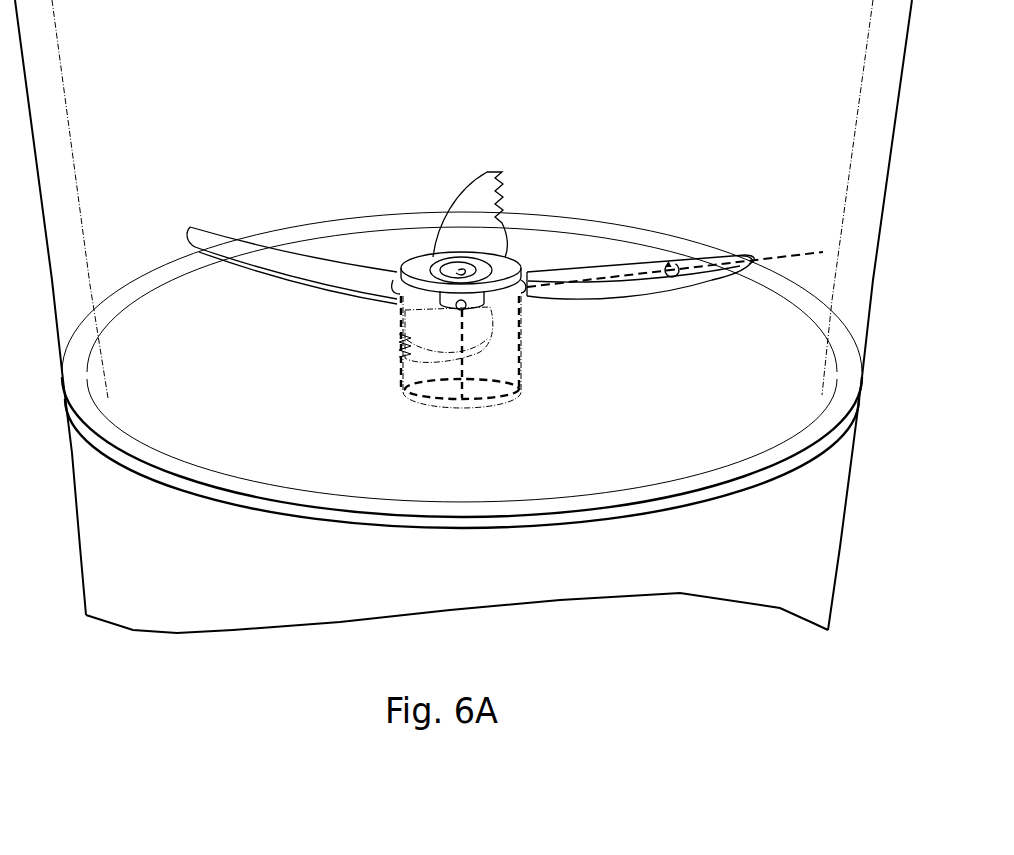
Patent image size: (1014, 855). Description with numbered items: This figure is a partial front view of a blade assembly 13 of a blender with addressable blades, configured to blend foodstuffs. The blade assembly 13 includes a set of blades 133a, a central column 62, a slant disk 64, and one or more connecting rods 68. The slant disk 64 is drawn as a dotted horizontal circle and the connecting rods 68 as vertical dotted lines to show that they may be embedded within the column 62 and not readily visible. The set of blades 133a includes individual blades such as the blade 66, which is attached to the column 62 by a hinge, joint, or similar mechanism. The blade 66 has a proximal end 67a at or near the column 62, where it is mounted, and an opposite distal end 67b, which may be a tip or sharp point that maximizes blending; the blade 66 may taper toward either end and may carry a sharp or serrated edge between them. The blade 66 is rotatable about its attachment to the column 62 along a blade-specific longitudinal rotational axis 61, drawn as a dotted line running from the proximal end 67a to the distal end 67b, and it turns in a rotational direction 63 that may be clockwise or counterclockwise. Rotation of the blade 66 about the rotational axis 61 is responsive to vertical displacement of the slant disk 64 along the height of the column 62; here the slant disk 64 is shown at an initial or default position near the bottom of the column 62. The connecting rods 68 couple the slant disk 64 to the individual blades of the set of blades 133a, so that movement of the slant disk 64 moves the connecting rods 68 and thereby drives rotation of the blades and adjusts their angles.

The blade assembly 13 is at (471, 106).
The set of blades 133a is at (175, 227).
The central column 62 is at (425, 281).
The blade 66 is at (575, 250).
The rotational direction 63 is at (674, 250).
The rotational axis 61 is at (770, 241).
The proximal end 67a is at (560, 312).
The distal end 67b is at (745, 282).
The connecting rods 68 is at (510, 400).
The slant disk 64 is at (529, 401).